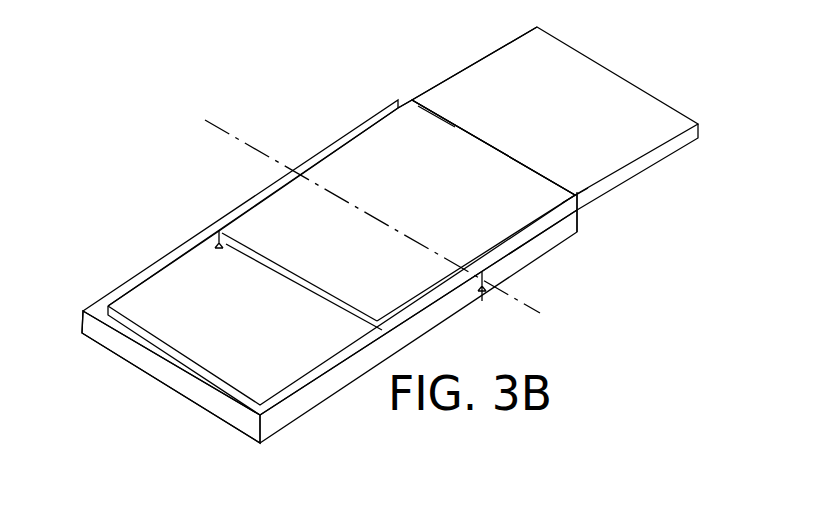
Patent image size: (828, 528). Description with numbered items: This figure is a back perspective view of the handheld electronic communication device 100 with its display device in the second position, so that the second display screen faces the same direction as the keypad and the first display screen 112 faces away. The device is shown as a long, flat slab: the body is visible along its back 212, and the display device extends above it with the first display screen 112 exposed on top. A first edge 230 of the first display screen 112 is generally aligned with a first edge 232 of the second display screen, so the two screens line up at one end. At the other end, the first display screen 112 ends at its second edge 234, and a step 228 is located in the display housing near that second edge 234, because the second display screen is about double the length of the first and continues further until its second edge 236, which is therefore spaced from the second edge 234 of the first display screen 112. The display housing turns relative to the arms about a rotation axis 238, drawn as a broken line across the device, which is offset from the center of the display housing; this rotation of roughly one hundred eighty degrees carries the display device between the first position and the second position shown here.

The handheld electronic communication device 100 is at (346, 445).
The back 212 is at (132, 315).
The first edge of the second display screen 232 is at (242, 248).
The first edge of the first display screen 230 is at (244, 245).
The first display screen 112 is at (345, 163).
The second edge of the second display screen 236 is at (580, 53).
The second edge of the first display screen 234 is at (455, 127).
The step 228 is at (574, 199).
The rotation axis 238 is at (488, 289).